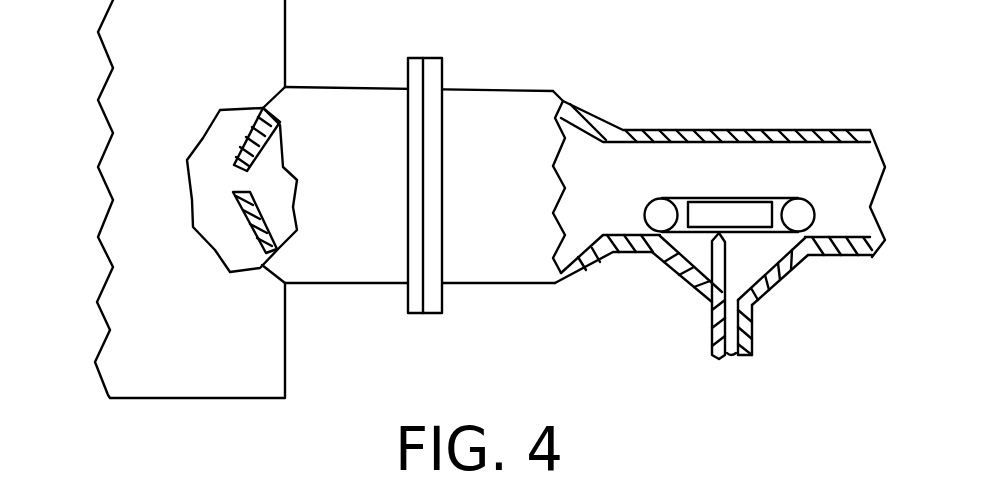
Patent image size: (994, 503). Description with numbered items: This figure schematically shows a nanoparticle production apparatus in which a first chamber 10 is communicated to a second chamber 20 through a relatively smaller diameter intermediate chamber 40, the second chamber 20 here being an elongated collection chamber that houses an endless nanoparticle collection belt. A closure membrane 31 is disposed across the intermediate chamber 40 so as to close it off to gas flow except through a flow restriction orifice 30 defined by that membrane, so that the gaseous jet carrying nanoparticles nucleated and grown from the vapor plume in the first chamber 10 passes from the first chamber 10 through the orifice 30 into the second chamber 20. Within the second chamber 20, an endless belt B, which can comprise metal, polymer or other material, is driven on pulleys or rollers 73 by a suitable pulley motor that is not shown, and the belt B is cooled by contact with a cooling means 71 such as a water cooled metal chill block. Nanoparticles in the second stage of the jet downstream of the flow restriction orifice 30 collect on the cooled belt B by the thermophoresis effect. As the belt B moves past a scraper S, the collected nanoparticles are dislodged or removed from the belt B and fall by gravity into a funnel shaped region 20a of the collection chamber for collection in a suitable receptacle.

The first chamber 10 is at (138, 332).
The second chamber 20 is at (675, 163).
The funnel shaped region 20a is at (763, 297).
The flow restriction orifice 30 is at (245, 180).
The closure membrane 31 is at (273, 231).
The intermediate chamber 40 is at (505, 253).
The cooling means 71 is at (730, 210).
The pulleys or rollers 73 is at (657, 210).
The endless belt B is at (684, 190).
The scraper S is at (717, 250).